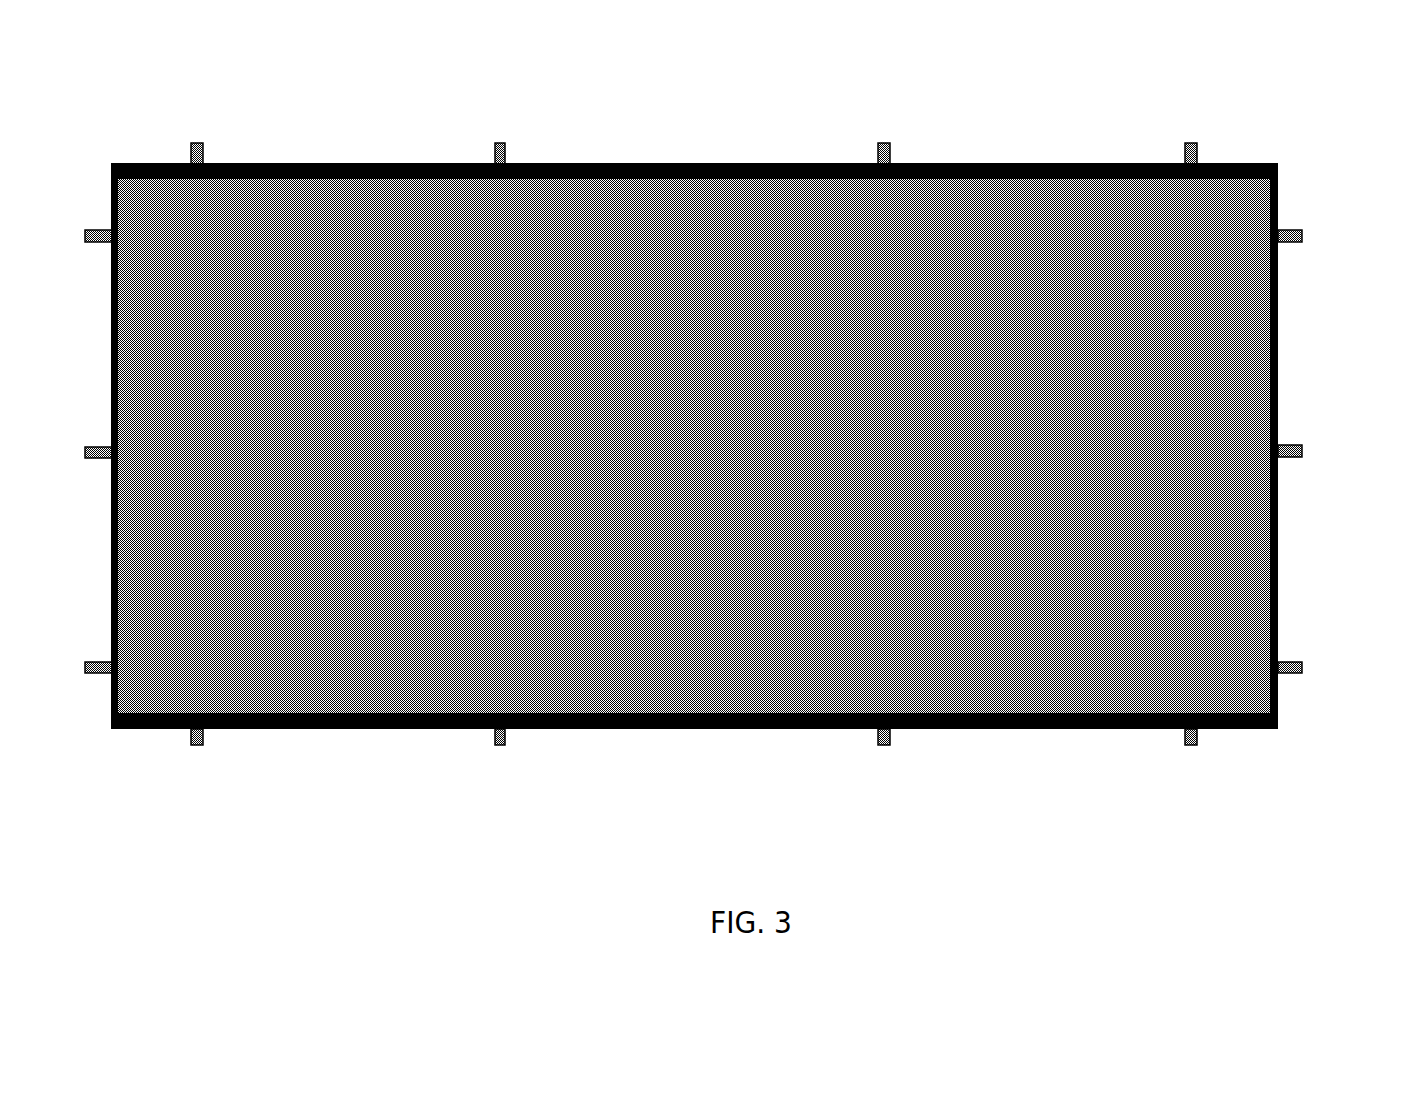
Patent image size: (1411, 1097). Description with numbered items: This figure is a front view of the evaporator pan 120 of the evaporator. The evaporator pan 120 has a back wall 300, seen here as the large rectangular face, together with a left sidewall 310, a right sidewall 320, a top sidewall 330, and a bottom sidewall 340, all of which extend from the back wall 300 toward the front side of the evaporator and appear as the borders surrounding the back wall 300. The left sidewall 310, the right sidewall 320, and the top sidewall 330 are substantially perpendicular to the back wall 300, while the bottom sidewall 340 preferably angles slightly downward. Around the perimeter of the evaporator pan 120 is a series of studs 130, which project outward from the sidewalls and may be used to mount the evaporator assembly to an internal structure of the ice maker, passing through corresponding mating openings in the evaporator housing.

The evaporator pan 120 is at (308, 138).
The back wall 300 is at (615, 313).
The left sidewall 310 is at (112, 495).
The right sidewall 320 is at (1277, 383).
The top sidewall 330 is at (398, 165).
The bottom sidewall 340 is at (1012, 729).
The studs 130 is at (1285, 446).